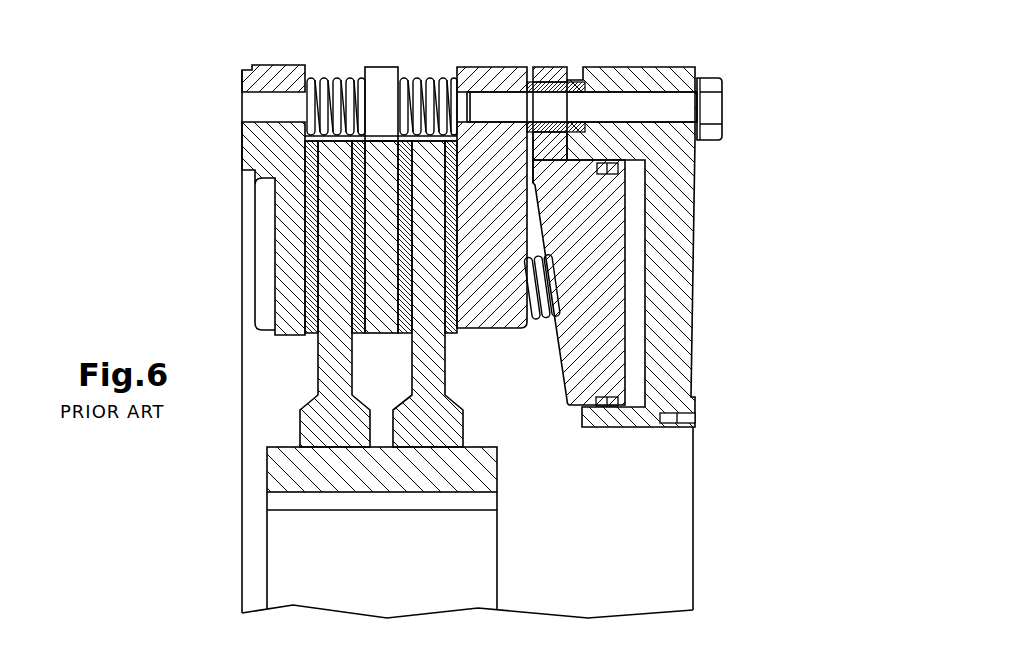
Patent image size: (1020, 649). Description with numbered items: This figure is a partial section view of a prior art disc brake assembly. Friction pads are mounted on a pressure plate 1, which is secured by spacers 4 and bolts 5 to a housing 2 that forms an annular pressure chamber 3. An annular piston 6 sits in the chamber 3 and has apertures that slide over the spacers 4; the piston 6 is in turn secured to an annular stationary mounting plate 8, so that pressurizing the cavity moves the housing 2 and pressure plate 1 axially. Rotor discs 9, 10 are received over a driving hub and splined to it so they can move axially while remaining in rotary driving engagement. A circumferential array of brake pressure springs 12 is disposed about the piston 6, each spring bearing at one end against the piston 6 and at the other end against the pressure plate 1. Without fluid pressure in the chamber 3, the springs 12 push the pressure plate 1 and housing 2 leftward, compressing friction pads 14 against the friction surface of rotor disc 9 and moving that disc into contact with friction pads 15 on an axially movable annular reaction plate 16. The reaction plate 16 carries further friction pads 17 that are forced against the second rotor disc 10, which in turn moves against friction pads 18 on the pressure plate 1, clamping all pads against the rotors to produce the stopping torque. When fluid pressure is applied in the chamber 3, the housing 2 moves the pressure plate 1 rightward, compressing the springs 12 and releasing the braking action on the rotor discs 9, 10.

The pressure plate 1 is at (499, 67).
The housing 2 is at (665, 187).
The annular pressure chamber 3 is at (503, 421).
The spacers 4 is at (572, 82).
The bolts 5 is at (723, 110).
The annular piston 6 is at (590, 312).
The annular stationary mounting plate 8 is at (240, 339).
The rotor disc 9 is at (300, 424).
The second rotor disc 10 is at (463, 425).
The brake pressure springs 12 is at (540, 326).
The friction pads 14 is at (311, 242).
The friction pads 15 is at (357, 217).
The reaction plate 16 is at (388, 192).
The friction pads 17 is at (405, 207).
The friction pads 18 is at (455, 192).